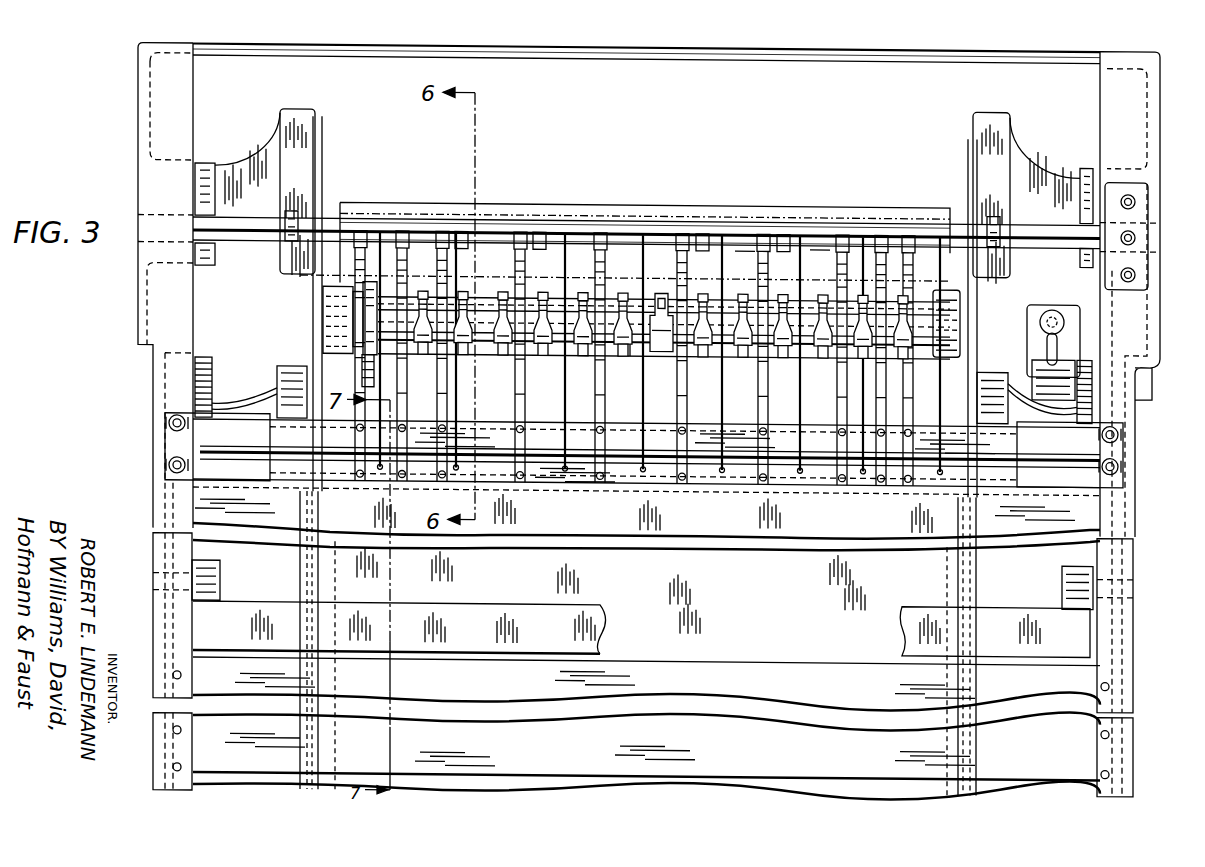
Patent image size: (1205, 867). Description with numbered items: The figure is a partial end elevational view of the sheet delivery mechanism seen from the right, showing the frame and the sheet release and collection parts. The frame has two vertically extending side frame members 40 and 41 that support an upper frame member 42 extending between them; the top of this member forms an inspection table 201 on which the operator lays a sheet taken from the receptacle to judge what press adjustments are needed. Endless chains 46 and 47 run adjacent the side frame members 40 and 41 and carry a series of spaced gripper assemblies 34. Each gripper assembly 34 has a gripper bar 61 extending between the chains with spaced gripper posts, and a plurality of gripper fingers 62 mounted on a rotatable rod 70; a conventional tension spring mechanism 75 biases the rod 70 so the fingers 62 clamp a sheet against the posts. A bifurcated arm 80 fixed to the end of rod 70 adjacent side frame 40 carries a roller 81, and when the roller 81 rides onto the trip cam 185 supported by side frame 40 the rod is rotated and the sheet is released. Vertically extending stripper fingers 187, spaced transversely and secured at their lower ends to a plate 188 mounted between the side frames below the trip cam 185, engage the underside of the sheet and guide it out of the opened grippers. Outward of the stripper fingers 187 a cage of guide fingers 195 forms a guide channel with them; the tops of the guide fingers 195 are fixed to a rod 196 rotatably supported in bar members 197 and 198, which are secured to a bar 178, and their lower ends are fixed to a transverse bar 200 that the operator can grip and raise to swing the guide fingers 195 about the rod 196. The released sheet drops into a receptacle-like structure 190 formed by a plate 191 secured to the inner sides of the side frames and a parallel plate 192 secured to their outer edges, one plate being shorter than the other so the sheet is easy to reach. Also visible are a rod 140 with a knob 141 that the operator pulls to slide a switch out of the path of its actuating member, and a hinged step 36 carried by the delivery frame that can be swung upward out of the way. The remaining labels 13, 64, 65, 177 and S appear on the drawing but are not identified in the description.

The inspection table 201 is at (495, 45).
The upper frame member 42 is at (630, 60).
The side frame member 40 is at (140, 87).
The side frame member 41 is at (1157, 98).
The endless chain 46 is at (322, 153).
The endless chain 47 is at (966, 160).
The bar member 197 is at (293, 210).
The bar member 198 is at (995, 217).
The stripper fingers 187 is at (682, 243).
The rod 196 is at (740, 227).
The trip cam 185 is at (360, 283).
The bifurcated arm 80 is at (322, 316).
The roller 81 is at (370, 325).
The sprocket 64 is at (338, 354).
The gripper assembly 34 is at (502, 291).
The gripper bar 61 is at (632, 300).
The conveyor 13 is at (663, 268).
The rod 177 is at (743, 248).
The bar 178 is at (817, 247).
The gripper fingers 62 is at (745, 340).
The rod 70 is at (634, 345).
The tension spring mechanism 75 is at (668, 345).
The sprocket 65 is at (946, 358).
The knob 141 is at (1056, 312).
The rod 140 is at (1043, 342).
The plate 188 is at (536, 432).
The bar 200 is at (531, 480).
The receptacle-like structure 190 is at (150, 490).
The plate 191 is at (192, 556).
The guide fingers 195 is at (793, 440).
The hinged step 36 is at (598, 605).
The plate 192 is at (772, 677).
The sheet S is at (717, 187).